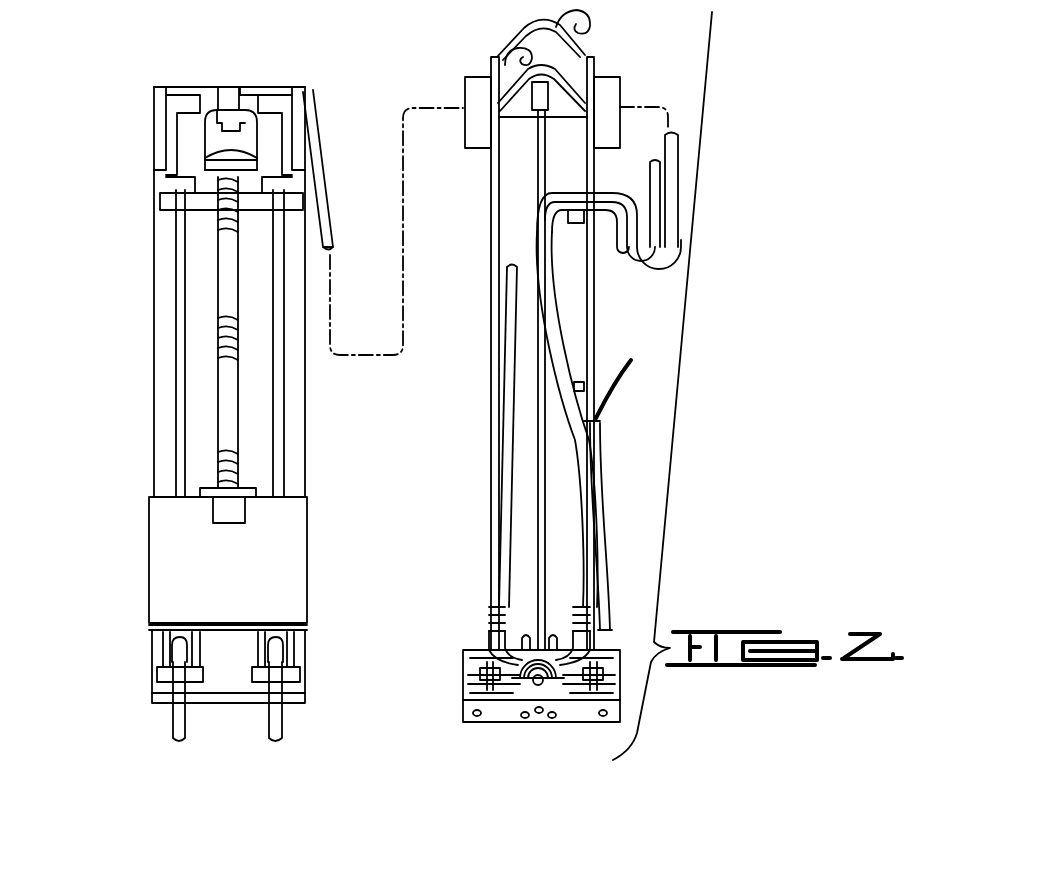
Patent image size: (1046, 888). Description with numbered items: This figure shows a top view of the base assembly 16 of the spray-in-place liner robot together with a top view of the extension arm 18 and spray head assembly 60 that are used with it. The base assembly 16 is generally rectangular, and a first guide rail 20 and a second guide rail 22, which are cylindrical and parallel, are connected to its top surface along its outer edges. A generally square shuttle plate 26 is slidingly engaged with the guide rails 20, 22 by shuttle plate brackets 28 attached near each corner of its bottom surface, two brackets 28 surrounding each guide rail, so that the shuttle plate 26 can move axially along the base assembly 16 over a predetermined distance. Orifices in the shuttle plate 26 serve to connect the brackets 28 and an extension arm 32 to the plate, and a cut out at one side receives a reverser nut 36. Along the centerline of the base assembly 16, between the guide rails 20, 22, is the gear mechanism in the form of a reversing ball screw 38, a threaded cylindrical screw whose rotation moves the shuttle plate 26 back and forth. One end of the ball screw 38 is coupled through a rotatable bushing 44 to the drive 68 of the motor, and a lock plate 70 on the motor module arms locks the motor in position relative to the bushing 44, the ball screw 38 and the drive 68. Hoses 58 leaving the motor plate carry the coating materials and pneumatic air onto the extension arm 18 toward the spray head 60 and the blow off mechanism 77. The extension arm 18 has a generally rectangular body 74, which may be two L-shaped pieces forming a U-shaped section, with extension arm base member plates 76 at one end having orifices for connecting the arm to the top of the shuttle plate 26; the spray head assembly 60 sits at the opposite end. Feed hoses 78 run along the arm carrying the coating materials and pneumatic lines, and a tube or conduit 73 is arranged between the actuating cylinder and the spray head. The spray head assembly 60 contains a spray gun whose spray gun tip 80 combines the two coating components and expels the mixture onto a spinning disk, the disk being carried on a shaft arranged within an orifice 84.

The base assembly 16 is at (158, 247).
The extension arm 18 is at (557, 254).
The first guide rail 20 is at (285, 445).
The second guide rail 22 is at (178, 462).
The shuttle plate 26 is at (158, 578).
The shuttle plate bracket 28 is at (160, 631).
The extension arm 32 is at (513, 412).
The reverser nut 36 is at (222, 508).
The reversing ball screw 38 is at (222, 278).
The rotatable bushing 44 is at (225, 130).
The hoses 58 is at (323, 153).
The spray head assembly 60 is at (507, 660).
The drive 68 is at (228, 90).
The lock plate 70 is at (268, 88).
The tube or conduit 73 is at (537, 167).
The body 74 is at (515, 203).
The extension arm base member plate 76 is at (470, 86).
The blow off mechanism 77 is at (532, 42).
The feed hoses 78 is at (565, 357).
The spray gun tip 80 is at (543, 679).
The orifice 84 is at (540, 718).